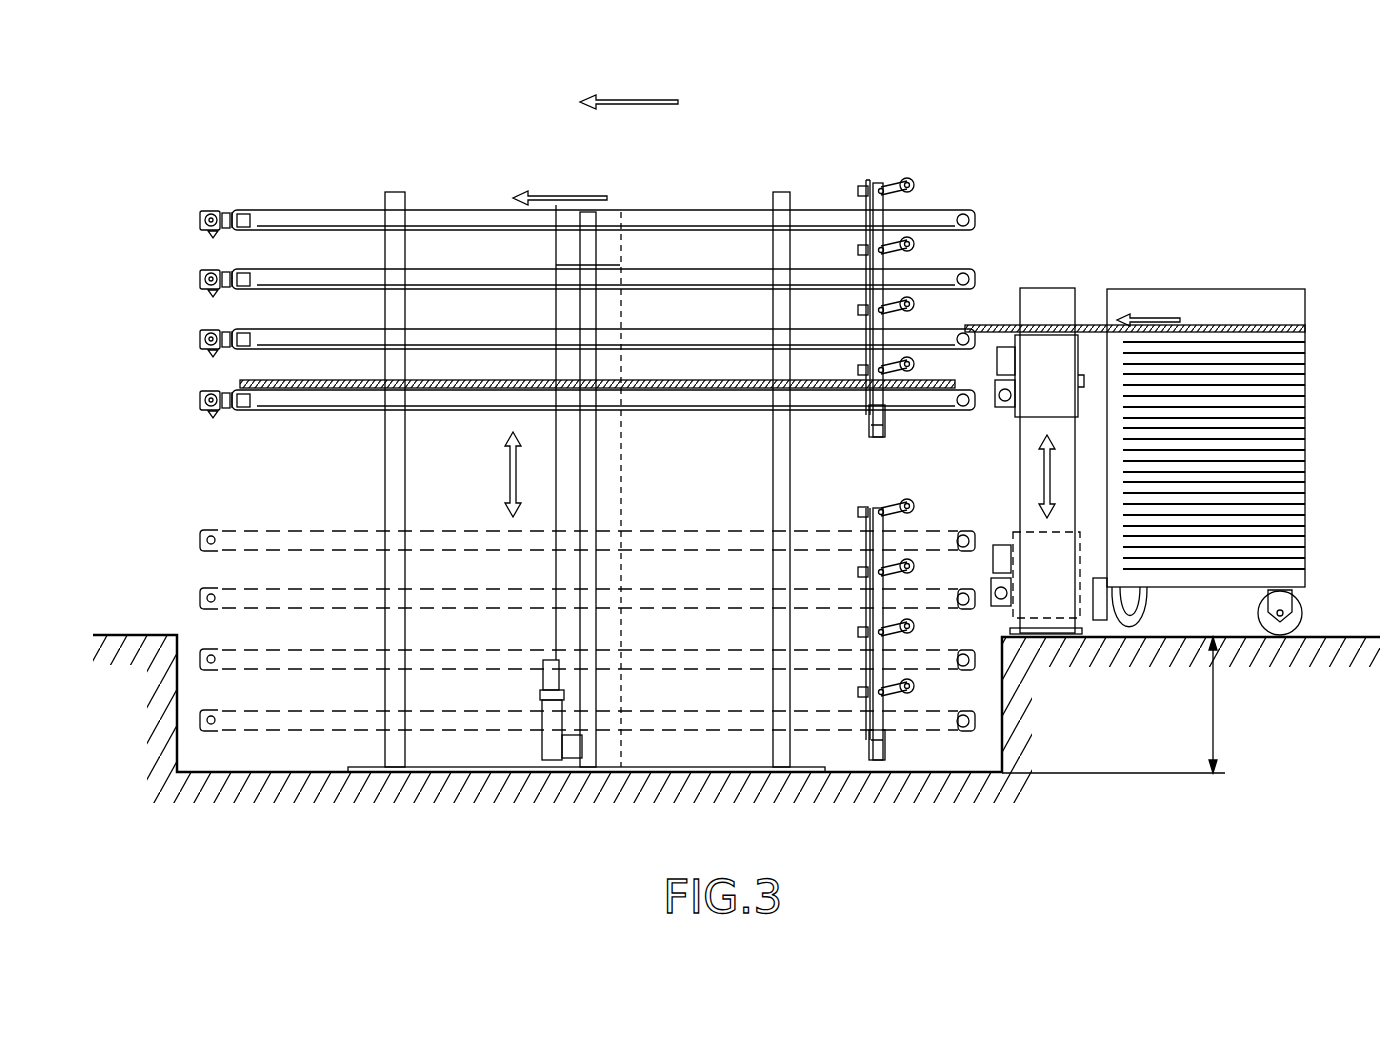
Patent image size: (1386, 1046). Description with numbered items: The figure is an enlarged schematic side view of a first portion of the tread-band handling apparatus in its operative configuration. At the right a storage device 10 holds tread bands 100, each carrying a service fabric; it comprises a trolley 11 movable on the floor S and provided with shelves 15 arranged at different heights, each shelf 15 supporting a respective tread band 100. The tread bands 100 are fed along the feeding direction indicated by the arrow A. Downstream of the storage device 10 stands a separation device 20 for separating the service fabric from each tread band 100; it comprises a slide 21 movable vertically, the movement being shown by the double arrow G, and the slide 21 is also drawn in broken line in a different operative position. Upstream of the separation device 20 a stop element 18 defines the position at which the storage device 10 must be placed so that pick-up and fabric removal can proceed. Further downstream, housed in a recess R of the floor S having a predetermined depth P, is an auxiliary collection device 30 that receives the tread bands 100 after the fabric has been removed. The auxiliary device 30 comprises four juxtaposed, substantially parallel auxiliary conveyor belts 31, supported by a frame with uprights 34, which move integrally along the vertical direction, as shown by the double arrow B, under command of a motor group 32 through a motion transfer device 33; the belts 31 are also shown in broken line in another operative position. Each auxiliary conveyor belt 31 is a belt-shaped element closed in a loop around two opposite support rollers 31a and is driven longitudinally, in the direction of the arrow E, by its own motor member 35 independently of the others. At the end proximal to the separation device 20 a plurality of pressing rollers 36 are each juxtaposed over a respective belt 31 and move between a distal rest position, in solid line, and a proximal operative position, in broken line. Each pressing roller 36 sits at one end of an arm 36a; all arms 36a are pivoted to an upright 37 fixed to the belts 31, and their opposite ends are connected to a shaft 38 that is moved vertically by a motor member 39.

The auxiliary collection device 30 is at (612, 82).
The auxiliary conveyor belt 31 is at (569, 433).
The support roller 31a is at (232, 210).
The upright 34 is at (392, 192).
The motor member 35 is at (207, 210).
The motor group 32 is at (543, 742).
The motion transfer device 33 is at (626, 695).
The pressing roller 36 is at (912, 184).
The arm 36a is at (896, 180).
The upright 37 is at (872, 205).
The shaft 38 is at (862, 263).
The motor member 39 is at (866, 420).
The tread band 100 is at (680, 375).
The separation device 20 is at (1033, 473).
The slide 21 is at (1031, 300).
The storage device 10 is at (1229, 468).
The trolley 11 is at (1243, 290).
The shelf 15 is at (1320, 341).
The stop element 18 is at (1100, 598).
The feeding direction A is at (643, 100).
The longitudinal direction E is at (530, 193).
The vertical movement of auxiliary conveyor belts B is at (512, 470).
The vertical movement of slide G is at (1035, 475).
The depth P is at (1220, 705).
The floor S is at (1330, 640).
The recess R is at (925, 772).